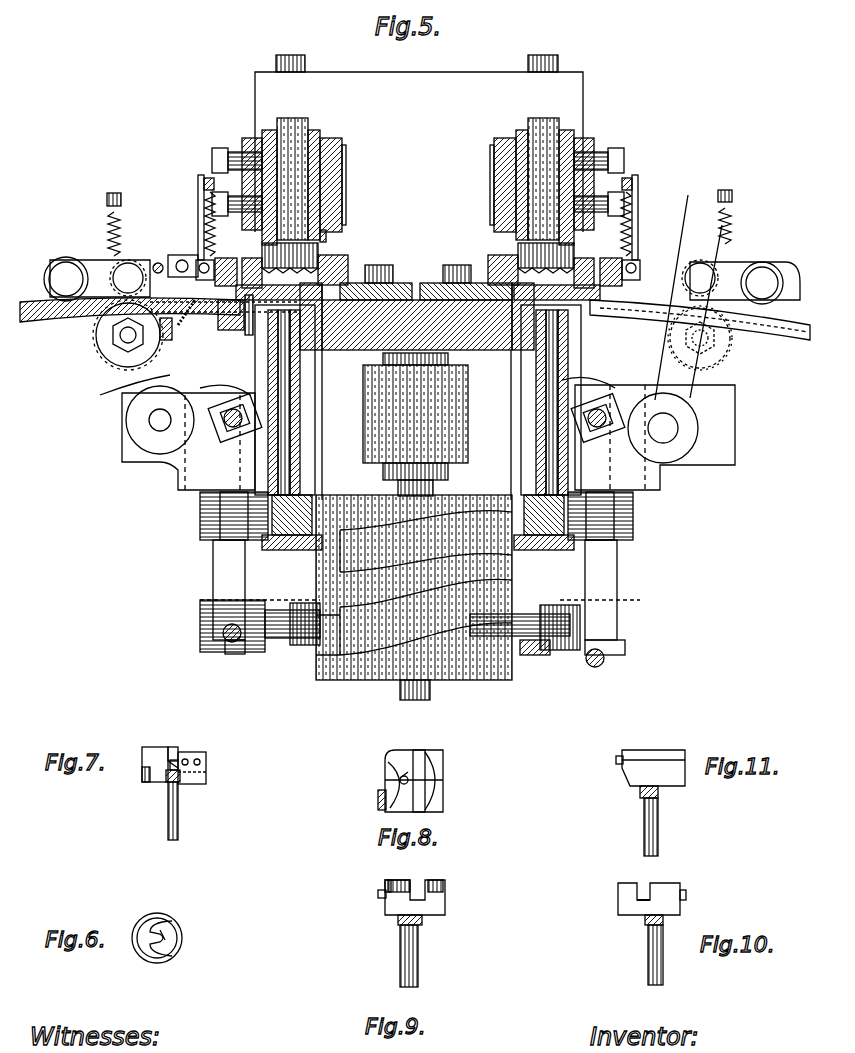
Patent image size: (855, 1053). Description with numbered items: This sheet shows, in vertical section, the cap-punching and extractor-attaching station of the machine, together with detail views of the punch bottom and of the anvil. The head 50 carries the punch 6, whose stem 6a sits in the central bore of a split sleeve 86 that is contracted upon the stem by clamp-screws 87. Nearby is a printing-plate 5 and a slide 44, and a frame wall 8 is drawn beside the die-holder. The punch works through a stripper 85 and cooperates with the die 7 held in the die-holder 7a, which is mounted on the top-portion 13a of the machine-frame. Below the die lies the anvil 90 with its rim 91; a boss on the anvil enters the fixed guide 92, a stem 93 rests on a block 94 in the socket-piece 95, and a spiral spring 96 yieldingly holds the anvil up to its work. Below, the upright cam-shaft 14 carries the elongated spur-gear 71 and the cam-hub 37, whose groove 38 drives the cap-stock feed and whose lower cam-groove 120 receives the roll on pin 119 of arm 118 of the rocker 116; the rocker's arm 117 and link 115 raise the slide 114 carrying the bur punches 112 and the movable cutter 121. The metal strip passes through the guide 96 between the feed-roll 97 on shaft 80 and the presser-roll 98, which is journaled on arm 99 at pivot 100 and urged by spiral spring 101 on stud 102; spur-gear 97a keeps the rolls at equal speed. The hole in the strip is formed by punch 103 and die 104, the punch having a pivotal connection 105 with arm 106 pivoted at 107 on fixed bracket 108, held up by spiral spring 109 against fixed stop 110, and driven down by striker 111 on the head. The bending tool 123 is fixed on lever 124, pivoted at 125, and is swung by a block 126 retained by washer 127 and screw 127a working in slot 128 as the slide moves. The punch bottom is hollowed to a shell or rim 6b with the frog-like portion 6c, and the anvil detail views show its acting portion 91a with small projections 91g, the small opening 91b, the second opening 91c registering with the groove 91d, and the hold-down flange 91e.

In FIG. 5, the slide 44 is at (445, 72).
In FIG. 5, the stem of the punch 6a is at (292, 118).
In FIG. 5, the sleeve 86 is at (325, 130).
In FIG. 5, the head 50 is at (340, 187).
In FIG. 5, the clamp-screws 87 is at (220, 148).
In FIG. 5, the punch 6 is at (322, 250).
In FIG. 6, the punch 6 is at (182, 950).
In FIG. 5, the stripper 85 is at (340, 258).
In FIG. 5, the die 7 is at (330, 262).
In FIG. 5, the die-holder 7a is at (380, 265).
In FIG. 5, the rim 91 is at (425, 293).
In FIG. 7, the rim 91 is at (142, 748).
In FIG. 8, the rim 91 is at (419, 781).
In FIG. 9, the rim 91 is at (398, 880).
In FIG. 10, the rim 91 is at (620, 883).
In FIG. 11, the rim 91 is at (665, 760).
In FIG. 5, the side wall 8 is at (303, 300).
In FIG. 5, the anvil 90 is at (300, 325).
In FIG. 7, the anvil 90 is at (158, 747).
In FIG. 8, the anvil 90 is at (433, 781).
In FIG. 9, the anvil 90 is at (430, 897).
In FIG. 10, the anvil 90 is at (628, 899).
In FIG. 11, the anvil 90 is at (653, 757).
In FIG. 5, the top-portion of the machine-frame 13a is at (360, 352).
In FIG. 5, the stem 93 is at (300, 408).
In FIG. 5, the fixed guide 92 is at (300, 445).
In FIG. 5, the block 94 is at (298, 520).
In FIG. 5, the spur-gear 71 is at (468, 424).
In FIG. 5, the cam-hub 37 is at (448, 490).
In FIG. 5, the groove 38 is at (340, 495).
In FIG. 5, the lower cam-groove 120 is at (380, 680).
In FIG. 5, the pin 119 is at (345, 680).
In FIG. 5, the cam-shaft 14 is at (432, 688).
In FIG. 5, the socket-piece 95 is at (280, 545).
In FIG. 5, the spiral spring 96 is at (275, 550).
In FIG. 5, the arm 99 is at (98, 260).
In FIG. 5, the pivot 100 is at (66, 257).
In FIG. 5, the presser-roll 98 is at (113, 280).
In FIG. 5, the printing-plate 5 is at (36, 305).
In FIG. 5, the spiral spring 101 is at (118, 212).
In FIG. 5, the stud 102 is at (114, 193).
In FIG. 5, the spiral spring 109 is at (205, 190).
In FIG. 5, the fixed stop 110 is at (205, 212).
In FIG. 5, the arm 106 is at (205, 258).
In FIG. 5, the pivot 107 is at (175, 258).
In FIG. 5, the pivotal connection 105 is at (188, 255).
In FIG. 5, the fixed bracket 108 is at (156, 278).
In FIG. 5, the die 104 is at (165, 310).
In FIG. 5, the punch 103 is at (178, 314).
In FIG. 5, the shaft 80 is at (120, 335).
In FIG. 5, the feed-roll 97 is at (110, 355).
In FIG. 5, the spur-gear 97a is at (756, 402).
In FIG. 5, the bending tool 123 is at (680, 230).
In FIG. 5, the striker 111 is at (334, 234).
In FIG. 5, the slide 114 is at (205, 478).
In FIG. 5, the lever 124 is at (130, 402).
In FIG. 5, the pivot 125 is at (150, 425).
In FIG. 5, the slot 128 is at (228, 432).
In FIG. 5, the washer 127 is at (205, 405).
In FIG. 5, the screw 127a is at (387, 374).
In FIG. 5, the block 126 is at (230, 455).
In FIG. 5, the punches 112 is at (228, 330).
In FIG. 5, the movable cutter 121 is at (250, 340).
In FIG. 5, the link 115 is at (228, 572).
In FIG. 5, the arm 117 is at (235, 655).
In FIG. 5, the arm 118 is at (290, 652).
In FIG. 5, the rocker 116 is at (525, 658).
In FIG. 7, the hold-down flange 91e is at (206, 756).
In FIG. 8, the hold-down flange 91e is at (382, 812).
In FIG. 9, the hold-down flange 91e is at (378, 893).
In FIG. 11, the hold-down flange 91e is at (616, 760).
In FIG. 7, the small opening 91b is at (176, 758).
In FIG. 8, the small opening 91b is at (385, 778).
In FIG. 7, the small projections 91g is at (180, 758).
In FIG. 8, the small projections 91g is at (460, 806).
In FIG. 7, the acting portion of the anvil 91a is at (166, 776).
In FIG. 8, the acting portion of the anvil 91a is at (395, 770).
In FIG. 8, the second opening 91c is at (422, 750).
In FIG. 9, the second opening 91c is at (428, 880).
In FIG. 10, the second opening 91c is at (645, 882).
In FIG. 8, the groove 91d is at (420, 778).
In FIG. 9, the groove 91d is at (418, 902).
In FIG. 10, the groove 91d is at (644, 905).
In FIG. 11, the groove 91d is at (649, 821).
In FIG. 6, the shell or rim 6b is at (180, 922).
In FIG. 6, the frog-like portion 6c is at (152, 912).